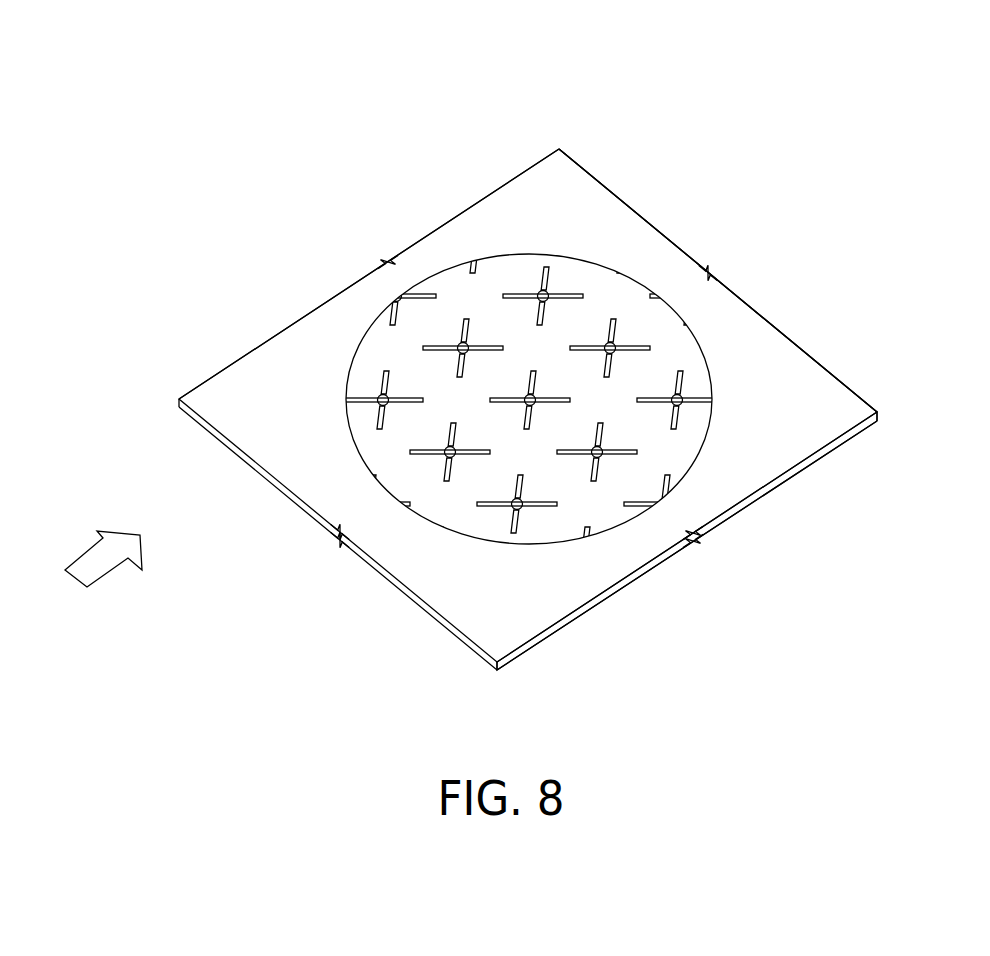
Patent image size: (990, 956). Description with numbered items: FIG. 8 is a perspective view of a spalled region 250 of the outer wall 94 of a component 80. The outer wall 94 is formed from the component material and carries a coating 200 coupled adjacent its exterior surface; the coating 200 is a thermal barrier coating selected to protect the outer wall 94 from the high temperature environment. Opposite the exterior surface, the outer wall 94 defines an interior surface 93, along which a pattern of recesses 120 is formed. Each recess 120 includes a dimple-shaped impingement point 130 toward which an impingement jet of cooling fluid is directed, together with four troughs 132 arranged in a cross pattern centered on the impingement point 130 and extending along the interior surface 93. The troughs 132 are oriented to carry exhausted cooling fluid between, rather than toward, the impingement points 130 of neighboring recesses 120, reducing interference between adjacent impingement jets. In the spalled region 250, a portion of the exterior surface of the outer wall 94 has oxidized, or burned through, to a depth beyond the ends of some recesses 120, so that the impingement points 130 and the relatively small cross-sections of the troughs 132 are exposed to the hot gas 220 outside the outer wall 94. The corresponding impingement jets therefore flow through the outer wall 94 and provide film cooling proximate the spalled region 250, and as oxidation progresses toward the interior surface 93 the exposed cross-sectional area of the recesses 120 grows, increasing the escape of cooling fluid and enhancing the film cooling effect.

The component 80 is at (801, 162).
The interior surface 93 is at (792, 538).
The outer wall 94 is at (450, 291).
The recesses 120 is at (489, 522).
The impingement point 130 is at (598, 324).
The trough 132 is at (649, 330).
The coating 200 is at (817, 392).
The hot gas 220 is at (110, 573).
The spalled region 250 is at (360, 294).